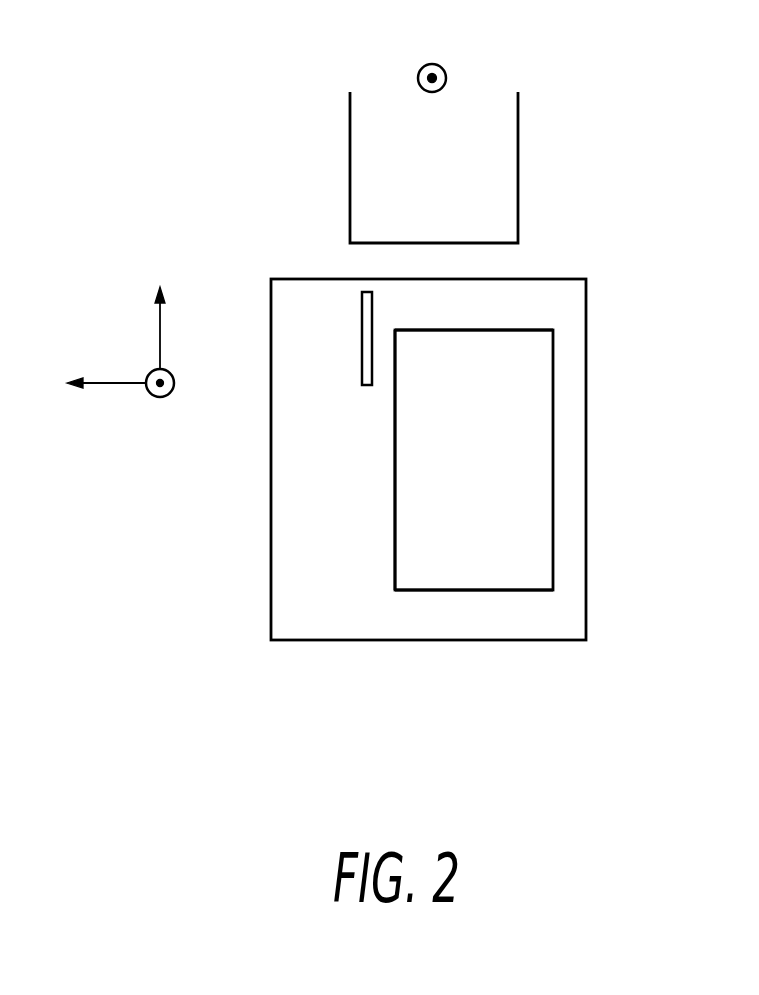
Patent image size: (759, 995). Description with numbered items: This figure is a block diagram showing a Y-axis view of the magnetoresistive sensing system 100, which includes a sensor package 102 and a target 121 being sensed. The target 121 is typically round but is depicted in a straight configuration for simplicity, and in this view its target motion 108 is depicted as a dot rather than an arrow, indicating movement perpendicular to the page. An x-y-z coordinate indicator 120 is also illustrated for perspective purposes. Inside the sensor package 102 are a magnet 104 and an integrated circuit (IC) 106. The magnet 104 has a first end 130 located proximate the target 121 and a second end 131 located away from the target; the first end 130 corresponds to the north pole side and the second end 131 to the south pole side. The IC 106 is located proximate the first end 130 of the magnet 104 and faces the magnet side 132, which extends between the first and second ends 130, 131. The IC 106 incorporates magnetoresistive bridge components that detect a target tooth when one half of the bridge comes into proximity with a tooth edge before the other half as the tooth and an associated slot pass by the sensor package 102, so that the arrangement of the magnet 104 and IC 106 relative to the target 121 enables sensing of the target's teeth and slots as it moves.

The magnetoresistive sensing system 100 is at (745, 745).
The sensor package 102 is at (568, 468).
The magnet 104 is at (455, 422).
The integrated circuit (IC) 106 is at (362, 362).
The target motion 108 is at (447, 79).
The x-y-z coordinate indicator 120 is at (115, 408).
The target 121 is at (503, 162).
The first end of magnet 130 is at (500, 328).
The second end of magnet 131 is at (525, 590).
The magnet side 132 is at (395, 463).